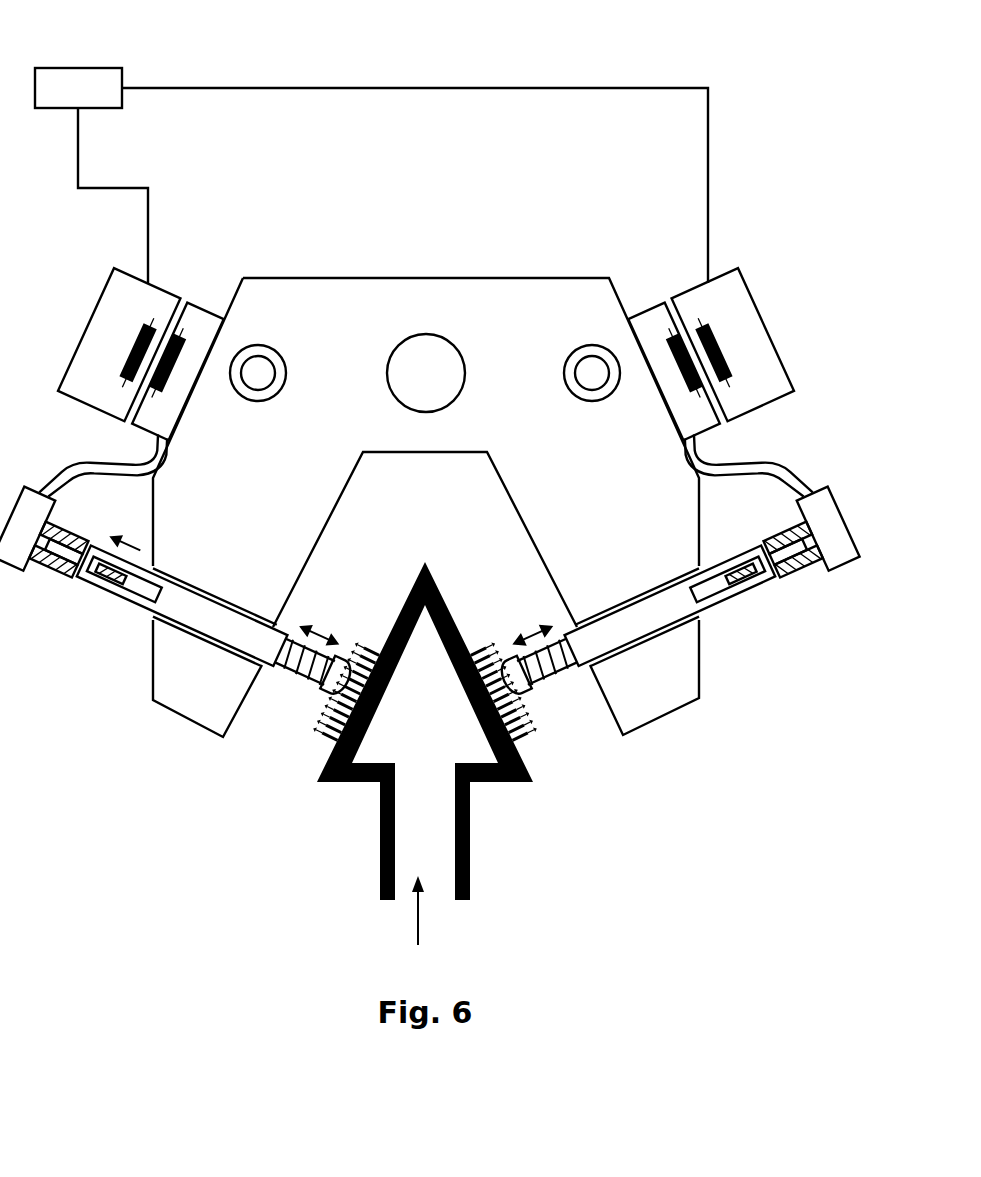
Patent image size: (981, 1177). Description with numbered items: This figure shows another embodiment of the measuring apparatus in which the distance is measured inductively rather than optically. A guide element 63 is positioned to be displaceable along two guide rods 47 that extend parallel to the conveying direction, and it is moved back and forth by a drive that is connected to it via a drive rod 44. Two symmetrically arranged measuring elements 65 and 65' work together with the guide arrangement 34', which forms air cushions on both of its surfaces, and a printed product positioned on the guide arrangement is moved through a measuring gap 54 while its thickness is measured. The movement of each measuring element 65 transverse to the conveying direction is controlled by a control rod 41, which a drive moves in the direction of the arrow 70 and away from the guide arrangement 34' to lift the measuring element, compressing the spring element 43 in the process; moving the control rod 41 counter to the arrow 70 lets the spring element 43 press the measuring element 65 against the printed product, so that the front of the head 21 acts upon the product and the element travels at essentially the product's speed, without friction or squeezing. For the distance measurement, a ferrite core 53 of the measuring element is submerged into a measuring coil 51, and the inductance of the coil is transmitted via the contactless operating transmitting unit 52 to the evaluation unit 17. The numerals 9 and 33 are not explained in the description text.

The evaluation unit 17 is at (70, 82).
The guide element 63 is at (493, 307).
The guide rods 47 is at (252, 370).
The drive rod 44 is at (420, 373).
The transmitting unit 52 is at (100, 370).
The measuring coil 51 is at (40, 570).
The ferrite core 53 is at (67, 550).
The measuring element 65 is at (182, 674).
The control rod 41 is at (115, 583).
The spring element 43 is at (263, 663).
The head 21 is at (326, 668).
The movement direction 9 is at (318, 630).
The arrow 70 is at (137, 543).
The guide arrangement 34' is at (455, 731).
The measuring gap 54 is at (338, 700).
The measuring element 65' is at (628, 490).
The flow direction 33 is at (433, 910).